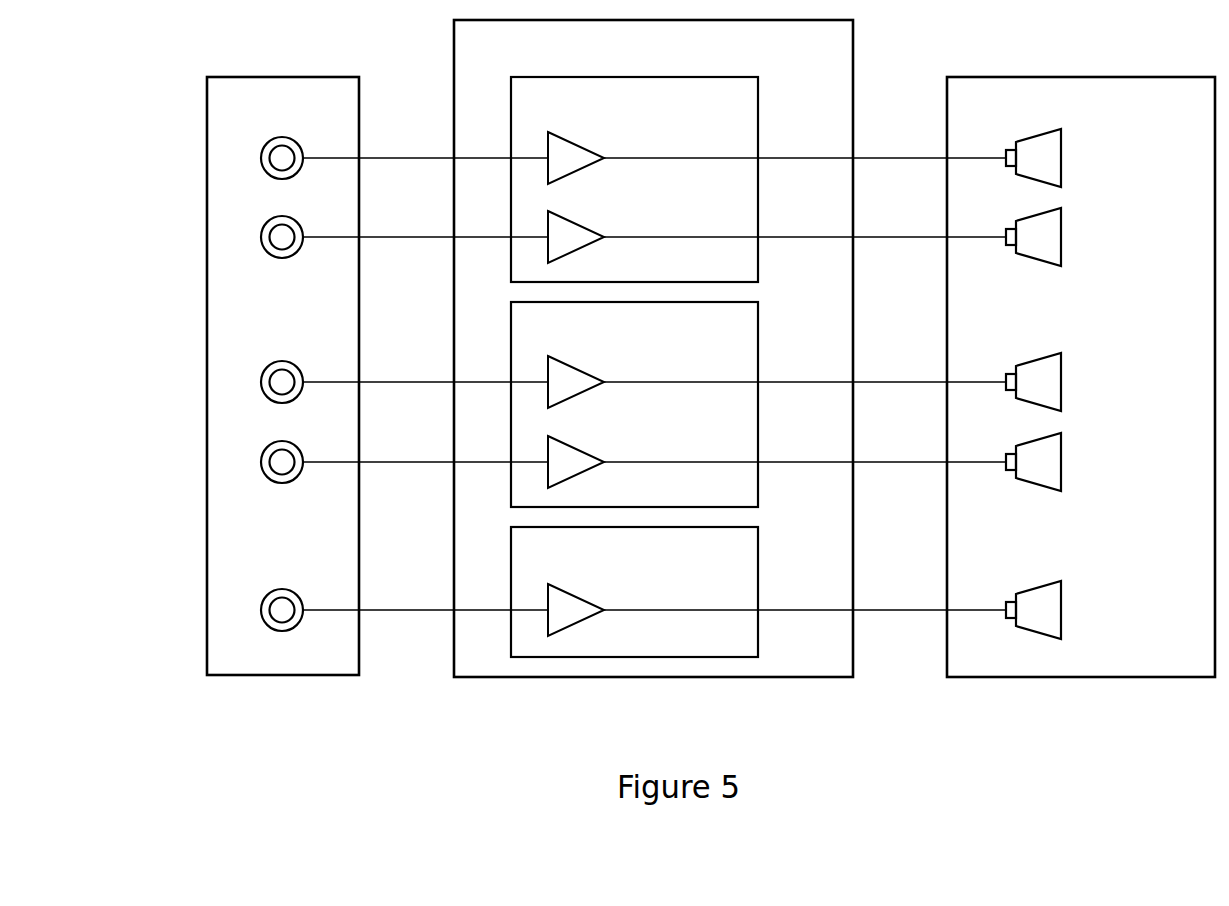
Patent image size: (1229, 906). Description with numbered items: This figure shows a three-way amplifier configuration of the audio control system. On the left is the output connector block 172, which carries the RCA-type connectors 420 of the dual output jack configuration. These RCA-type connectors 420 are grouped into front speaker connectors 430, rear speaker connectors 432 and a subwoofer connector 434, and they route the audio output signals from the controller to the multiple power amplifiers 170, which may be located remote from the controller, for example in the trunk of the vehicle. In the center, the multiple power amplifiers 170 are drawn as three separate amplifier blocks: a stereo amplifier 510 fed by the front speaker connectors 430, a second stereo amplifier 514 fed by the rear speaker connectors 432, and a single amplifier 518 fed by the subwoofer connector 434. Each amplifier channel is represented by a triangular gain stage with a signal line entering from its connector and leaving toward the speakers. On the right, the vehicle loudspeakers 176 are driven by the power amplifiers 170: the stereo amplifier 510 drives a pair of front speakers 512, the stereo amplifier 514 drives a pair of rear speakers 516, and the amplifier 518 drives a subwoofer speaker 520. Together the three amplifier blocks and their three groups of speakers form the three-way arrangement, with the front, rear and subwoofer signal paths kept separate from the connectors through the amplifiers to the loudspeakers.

The multiple power amplifiers 170 is at (822, 61).
The output connector block 172 is at (312, 90).
The vehicle loudspeakers 176 is at (1202, 117).
The RCA-type connectors 420 is at (264, 116).
The front speaker connectors 430 is at (202, 133).
The rear speaker connectors 432 is at (202, 358).
The subwoofer connector 434 is at (202, 588).
The stereo amplifier (front) 510 is at (749, 117).
The front speakers 512 is at (1072, 128).
The stereo amplifier (rear) 514 is at (749, 346).
The rear speakers 516 is at (1072, 348).
The amplifier (subwoofer) 518 is at (745, 567).
The subwoofer speaker 520 is at (1072, 575).